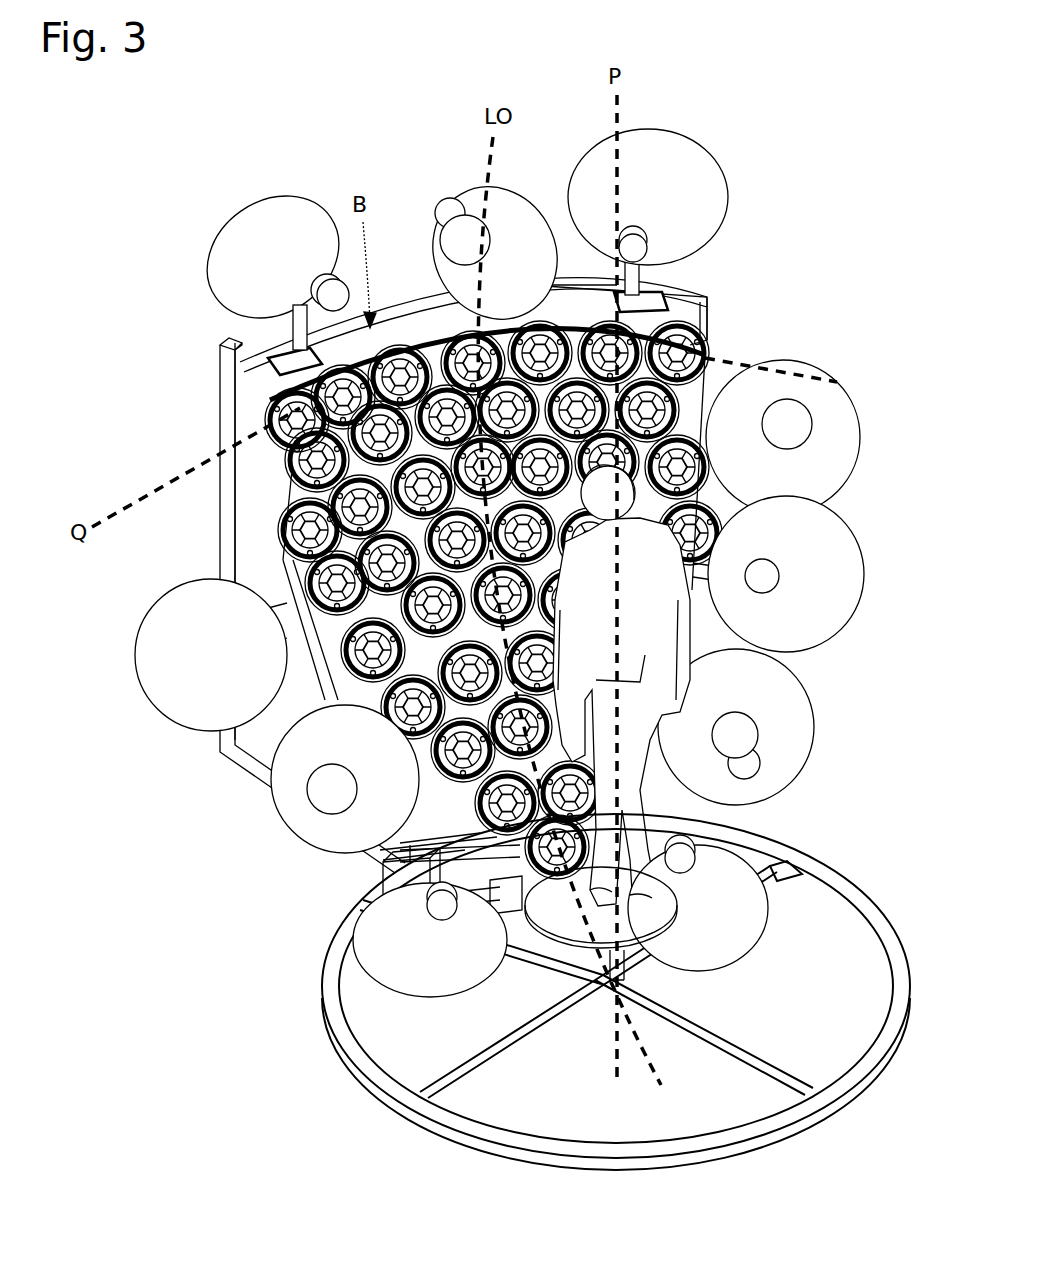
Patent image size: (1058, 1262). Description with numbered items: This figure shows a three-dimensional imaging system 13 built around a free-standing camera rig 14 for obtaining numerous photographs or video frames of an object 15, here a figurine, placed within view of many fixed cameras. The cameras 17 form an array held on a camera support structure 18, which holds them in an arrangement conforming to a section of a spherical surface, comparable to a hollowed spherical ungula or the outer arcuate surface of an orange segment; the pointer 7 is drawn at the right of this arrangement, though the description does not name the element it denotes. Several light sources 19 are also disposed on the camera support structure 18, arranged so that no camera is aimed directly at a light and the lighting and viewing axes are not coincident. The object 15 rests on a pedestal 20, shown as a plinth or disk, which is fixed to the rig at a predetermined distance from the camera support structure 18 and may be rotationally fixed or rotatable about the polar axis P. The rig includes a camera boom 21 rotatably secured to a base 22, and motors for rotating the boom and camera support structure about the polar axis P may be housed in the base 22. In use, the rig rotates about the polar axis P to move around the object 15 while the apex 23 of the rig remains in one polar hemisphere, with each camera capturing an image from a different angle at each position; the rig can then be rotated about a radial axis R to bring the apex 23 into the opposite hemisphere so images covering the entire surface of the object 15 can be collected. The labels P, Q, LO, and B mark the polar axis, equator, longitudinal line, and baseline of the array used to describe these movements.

The imaging device 7 is at (865, 400).
The 3D imaging system 13 is at (785, 196).
The camera rig 14 is at (256, 853).
The object 15 is at (692, 688).
The cameras 17 is at (712, 340).
The camera support structure 18 is at (710, 310).
The light sources 19 is at (850, 598).
The pedestal 20 is at (655, 932).
The camera boom 21 is at (235, 765).
The base 22 is at (390, 1100).
The apex 23 is at (505, 858).